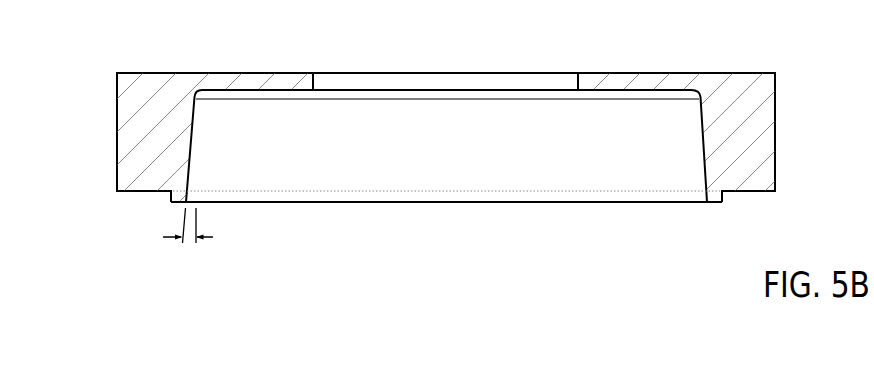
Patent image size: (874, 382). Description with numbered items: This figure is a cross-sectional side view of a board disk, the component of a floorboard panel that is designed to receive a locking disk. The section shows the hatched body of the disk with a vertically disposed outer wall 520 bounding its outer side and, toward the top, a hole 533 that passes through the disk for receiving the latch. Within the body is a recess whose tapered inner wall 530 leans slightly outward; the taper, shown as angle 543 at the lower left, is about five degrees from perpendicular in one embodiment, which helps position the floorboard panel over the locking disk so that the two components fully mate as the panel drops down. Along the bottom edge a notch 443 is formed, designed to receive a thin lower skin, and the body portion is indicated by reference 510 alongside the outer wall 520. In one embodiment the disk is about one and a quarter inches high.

The first portion of housing body 510 is at (275, 72).
The vertically disposed outer wall 520 is at (775, 137).
The hole 533 is at (455, 72).
The tapered inner wall 530 is at (700, 155).
The notch 443 is at (163, 192).
The angle 543 is at (193, 273).